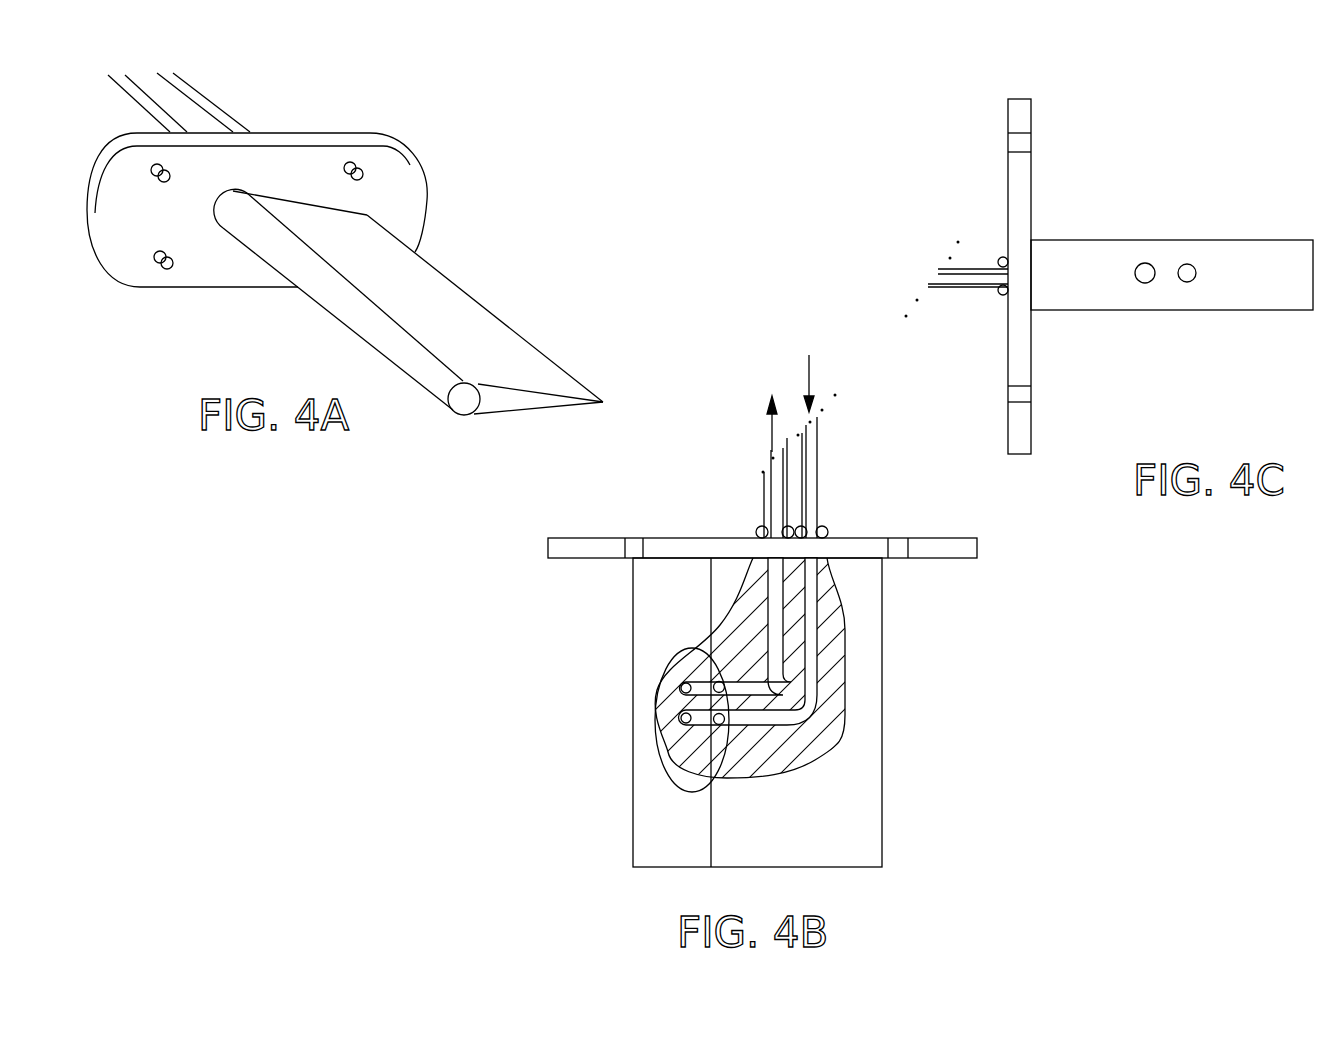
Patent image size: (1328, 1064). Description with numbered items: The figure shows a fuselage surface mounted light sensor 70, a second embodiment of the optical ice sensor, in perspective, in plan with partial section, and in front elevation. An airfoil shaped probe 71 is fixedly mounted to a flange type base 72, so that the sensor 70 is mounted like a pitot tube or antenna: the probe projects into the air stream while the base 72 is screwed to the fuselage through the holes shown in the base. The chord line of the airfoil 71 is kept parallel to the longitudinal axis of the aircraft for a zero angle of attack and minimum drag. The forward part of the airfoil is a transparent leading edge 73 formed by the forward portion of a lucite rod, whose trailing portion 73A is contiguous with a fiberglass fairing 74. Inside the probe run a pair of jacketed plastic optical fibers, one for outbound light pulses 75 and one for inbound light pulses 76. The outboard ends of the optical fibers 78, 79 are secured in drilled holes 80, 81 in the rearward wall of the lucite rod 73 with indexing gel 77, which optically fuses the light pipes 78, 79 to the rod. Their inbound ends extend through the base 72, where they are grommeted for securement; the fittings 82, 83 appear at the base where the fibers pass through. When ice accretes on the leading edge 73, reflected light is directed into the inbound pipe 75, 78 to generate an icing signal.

In FIG. 4A, the fuselage surface mounted light sensor 70 is at (518, 240).
In FIG. 4B, the fuselage surface mounted light sensor 70 is at (976, 711).
In FIG. 4C, the fuselage surface mounted light sensor 70 is at (968, 194).
In FIG. 4A, the airfoil shaped probe 71 is at (473, 305).
In FIG. 4A, the flange type base 72 is at (417, 195).
In FIG. 4A, the transparent leading edge 73 is at (462, 408).
In FIG. 4B, the transparent leading edge 73 is at (641, 855).
In FIG. 4C, the transparent leading edge 73 is at (1267, 292).
In FIG. 4A, the trailing portion 73A is at (480, 404).
In FIG. 4A, the fiberglass fairing 74 is at (533, 408).
In FIG. 4A, the outbound light pulses 75 is at (157, 112).
In FIG. 4B, the outbound light pulses 75 is at (768, 495).
In FIG. 4C, the outbound light pulses 75 is at (967, 287).
In FIG. 4A, the inbound light pulses 76 is at (227, 113).
In FIG. 4B, the inbound light pulses 76 is at (818, 481).
In FIG. 4B, the indexing gel 77 is at (672, 690).
In FIG. 4B, the optical fiber 78 is at (683, 686).
In FIG. 4C, the optical fiber 78 is at (1147, 262).
In FIG. 4B, the optical fiber 79 is at (670, 737).
In FIG. 4C, the optical fiber 79 is at (1192, 266).
In FIG. 4B, the drilled hole 80 is at (718, 772).
In FIG. 4B, the drilled hole 81 is at (712, 650).
In FIG. 4B, the fitting 82 is at (758, 530).
In FIG. 4C, the fitting 82 is at (1002, 294).
In FIG. 4B, the fitting 83 is at (830, 527).